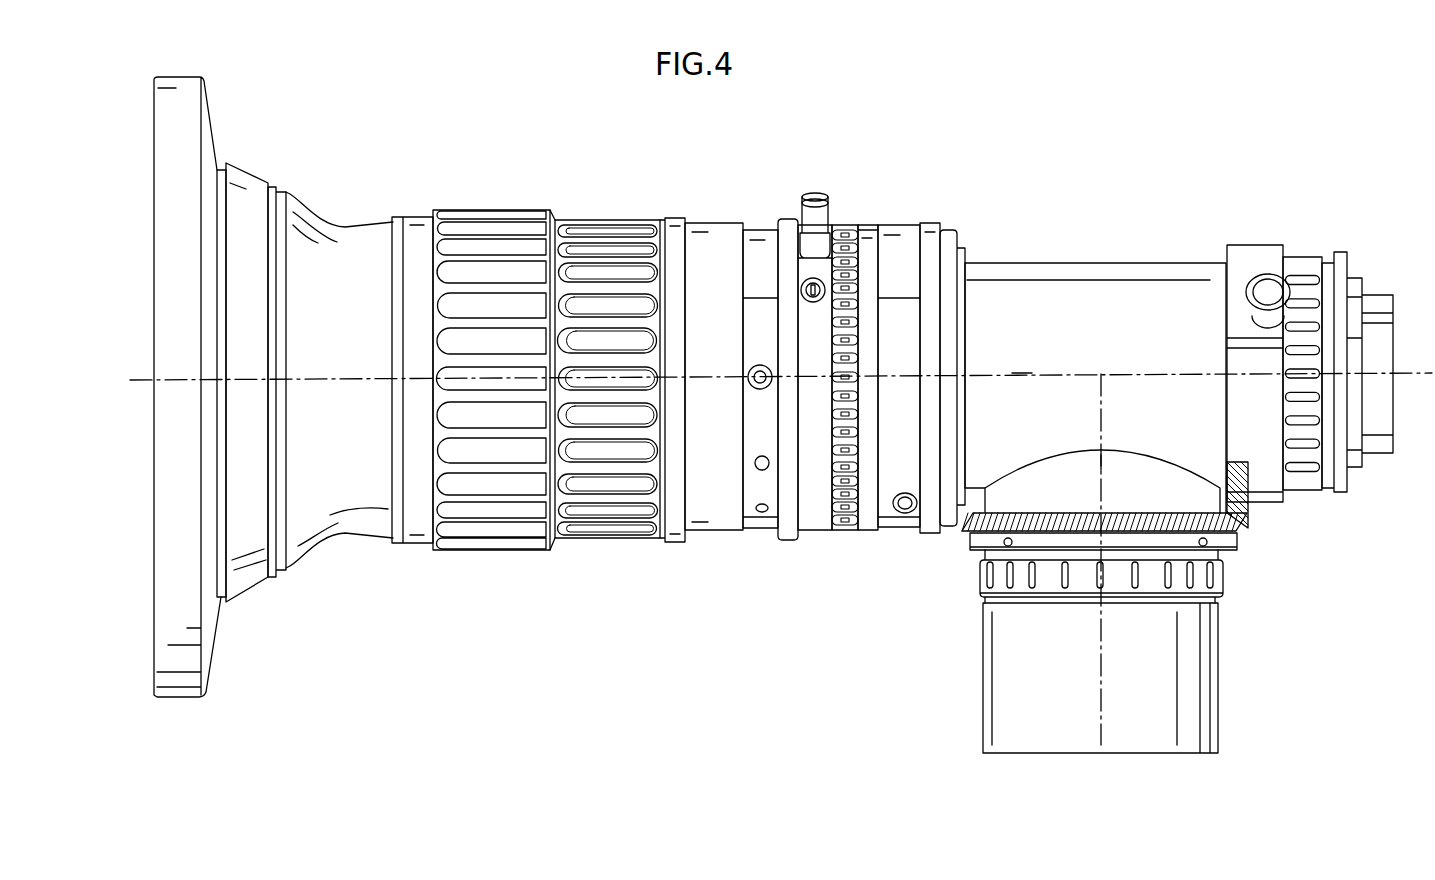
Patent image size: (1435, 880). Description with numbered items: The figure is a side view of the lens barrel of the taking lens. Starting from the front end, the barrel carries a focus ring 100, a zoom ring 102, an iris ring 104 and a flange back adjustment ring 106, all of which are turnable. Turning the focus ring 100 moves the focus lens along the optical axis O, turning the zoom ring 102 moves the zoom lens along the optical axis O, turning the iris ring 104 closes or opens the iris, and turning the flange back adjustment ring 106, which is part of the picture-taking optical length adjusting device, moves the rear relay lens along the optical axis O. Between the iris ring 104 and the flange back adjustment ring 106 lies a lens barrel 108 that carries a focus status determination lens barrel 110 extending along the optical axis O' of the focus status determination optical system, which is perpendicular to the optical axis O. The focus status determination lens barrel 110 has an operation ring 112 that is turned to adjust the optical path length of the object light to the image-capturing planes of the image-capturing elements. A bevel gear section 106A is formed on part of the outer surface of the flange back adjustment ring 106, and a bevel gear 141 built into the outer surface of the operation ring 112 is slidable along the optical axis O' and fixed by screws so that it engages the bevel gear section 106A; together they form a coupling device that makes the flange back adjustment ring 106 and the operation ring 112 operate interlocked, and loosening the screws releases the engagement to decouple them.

The focus ring 100 is at (623, 528).
The zoom ring 102 is at (820, 510).
The iris ring 104 is at (931, 513).
The flange back adjustment ring 106 is at (1258, 475).
The bevel gear section 106A is at (1240, 462).
The lens barrel 108 is at (1125, 283).
The focus status determination lens barrel 110 is at (1228, 713).
The operation ring 112 is at (998, 575).
The bevel gear 141 is at (970, 538).
The optical axis O is at (1037, 345).
The optical axis O' is at (1133, 482).